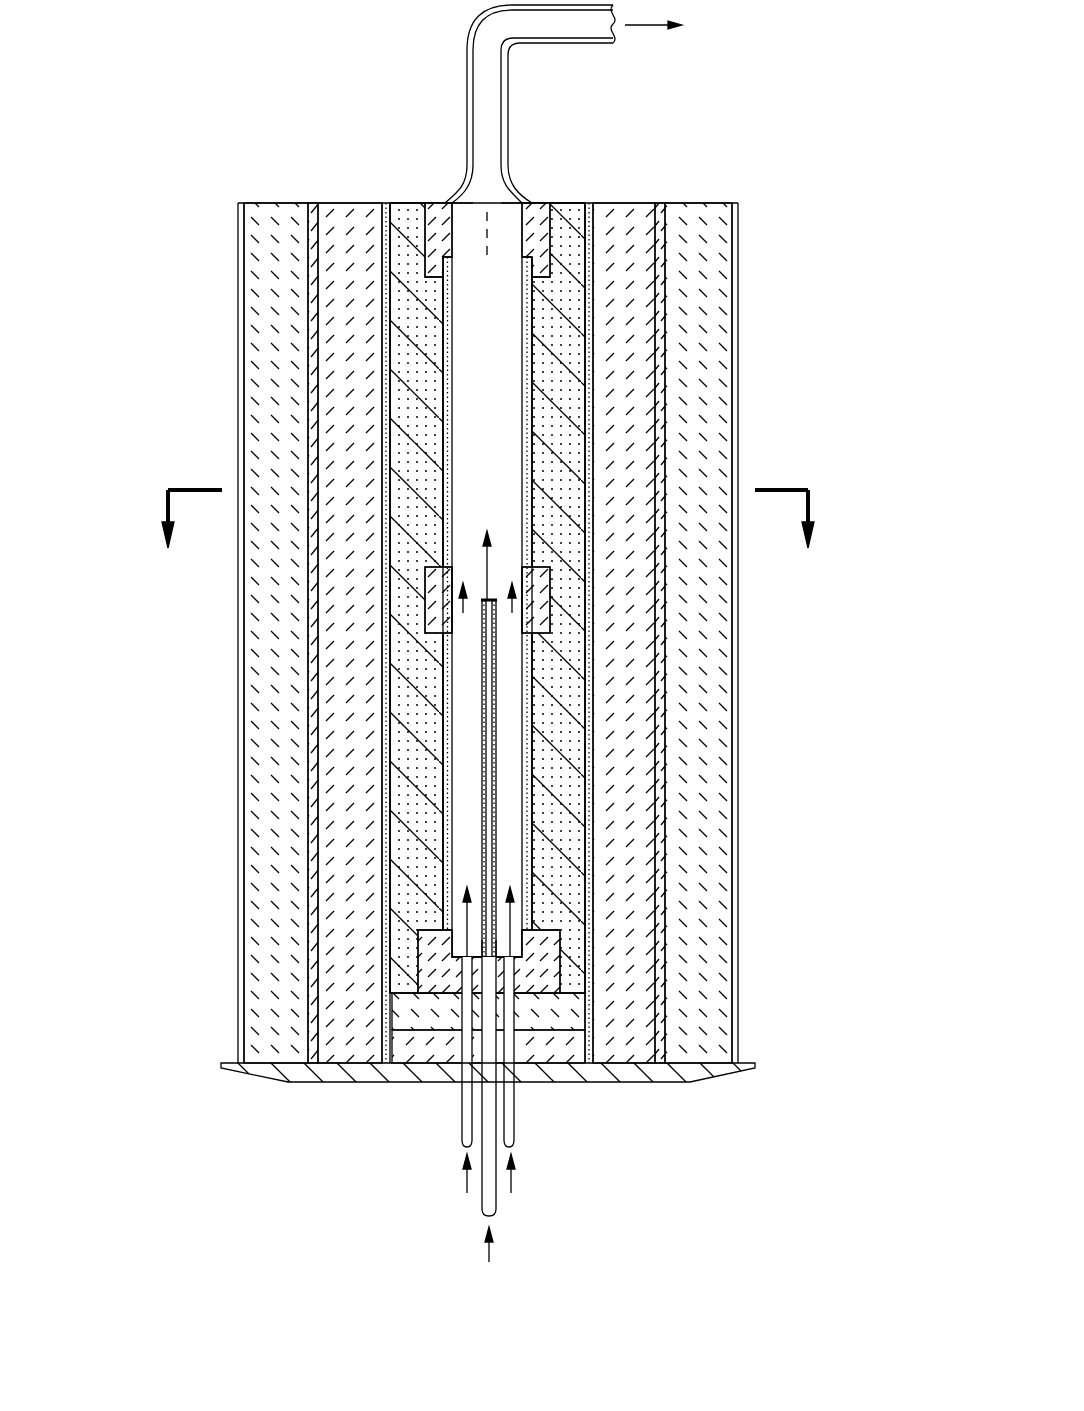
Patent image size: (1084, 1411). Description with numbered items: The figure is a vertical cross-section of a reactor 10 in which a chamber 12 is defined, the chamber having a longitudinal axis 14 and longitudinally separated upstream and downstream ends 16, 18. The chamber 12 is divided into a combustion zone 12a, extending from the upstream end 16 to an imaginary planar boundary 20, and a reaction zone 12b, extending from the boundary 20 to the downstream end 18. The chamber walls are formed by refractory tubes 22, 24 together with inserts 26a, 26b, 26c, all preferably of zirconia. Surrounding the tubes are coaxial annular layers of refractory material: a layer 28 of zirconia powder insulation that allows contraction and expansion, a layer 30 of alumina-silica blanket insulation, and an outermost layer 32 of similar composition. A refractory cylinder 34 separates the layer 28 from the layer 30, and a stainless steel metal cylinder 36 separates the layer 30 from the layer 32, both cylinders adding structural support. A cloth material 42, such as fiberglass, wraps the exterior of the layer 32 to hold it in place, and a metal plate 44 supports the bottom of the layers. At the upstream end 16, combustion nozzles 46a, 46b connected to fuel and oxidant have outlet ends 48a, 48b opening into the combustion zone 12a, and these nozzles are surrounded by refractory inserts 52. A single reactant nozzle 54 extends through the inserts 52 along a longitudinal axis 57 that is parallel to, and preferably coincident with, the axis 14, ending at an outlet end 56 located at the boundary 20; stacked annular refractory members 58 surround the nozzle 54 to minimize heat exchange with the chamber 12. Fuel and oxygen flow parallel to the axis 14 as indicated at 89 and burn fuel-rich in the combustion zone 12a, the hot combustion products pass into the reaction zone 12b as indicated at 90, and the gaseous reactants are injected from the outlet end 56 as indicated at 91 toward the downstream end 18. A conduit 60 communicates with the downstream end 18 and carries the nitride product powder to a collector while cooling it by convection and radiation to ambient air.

The reactor 10 is at (765, 360).
The chamber 12 is at (492, 554).
The combustion zone 12a is at (466, 754).
The reaction zone 12b is at (491, 406).
The longitudinal axis 14 is at (467, 176).
The upstream end 16 is at (502, 950).
The downstream end 18 is at (492, 198).
The boundary 20 is at (465, 586).
The refractory tube 22 is at (496, 931).
The refractory tube 24 is at (455, 437).
The insert 26a is at (552, 935).
The insert 26b is at (445, 565).
The insert 26c is at (447, 248).
The layer 28 is at (576, 690).
The layer 30 is at (640, 690).
The layer 32 is at (714, 690).
The refractory cylinder 34 is at (595, 770).
The metal cylinder 36 is at (665, 770).
The cloth material 42 is at (740, 885).
The metal plate 44 is at (312, 1084).
The combustion nozzle 46a is at (436, 1075).
The combustion nozzle 46b is at (540, 1075).
The outlet end 48a is at (463, 960).
The outlet end 48b is at (520, 960).
The refractory inserts 52 is at (412, 1063).
The reactant nozzle 54 is at (499, 1212).
The outlet end 56 is at (513, 586).
The longitudinal axis 57 is at (487, 797).
The refractory members 58 is at (497, 606).
The conduit 60 is at (508, 104).
The fuel/oxygen flow 89 is at (468, 890).
The combustion products flow 90 is at (490, 562).
The reactant injection flow 91 is at (490, 552).